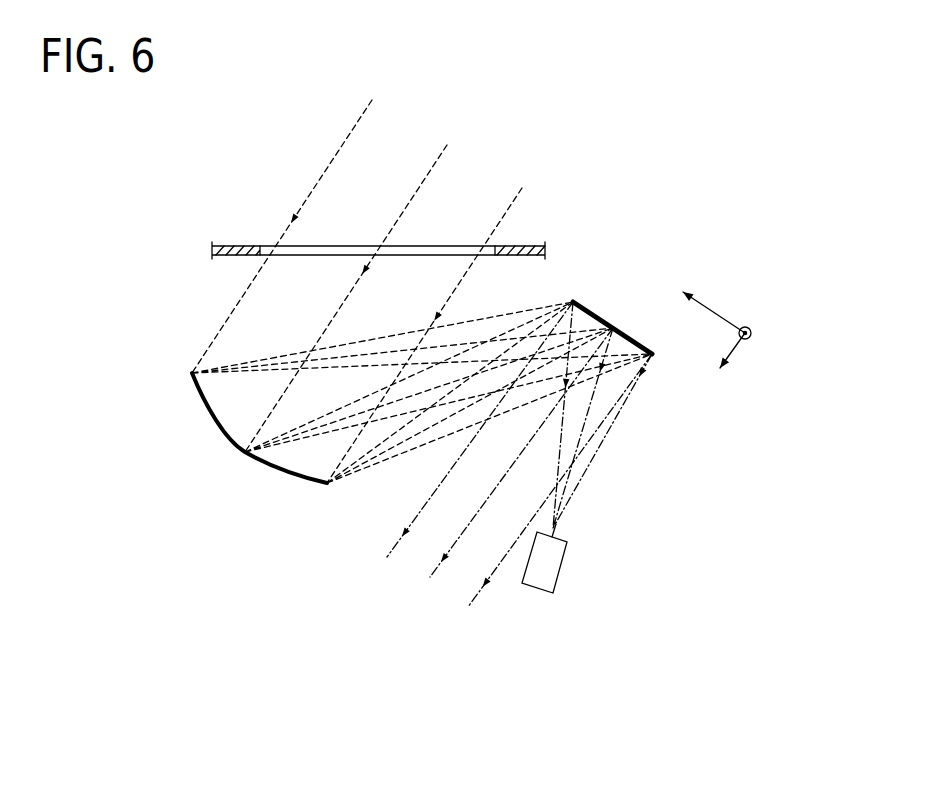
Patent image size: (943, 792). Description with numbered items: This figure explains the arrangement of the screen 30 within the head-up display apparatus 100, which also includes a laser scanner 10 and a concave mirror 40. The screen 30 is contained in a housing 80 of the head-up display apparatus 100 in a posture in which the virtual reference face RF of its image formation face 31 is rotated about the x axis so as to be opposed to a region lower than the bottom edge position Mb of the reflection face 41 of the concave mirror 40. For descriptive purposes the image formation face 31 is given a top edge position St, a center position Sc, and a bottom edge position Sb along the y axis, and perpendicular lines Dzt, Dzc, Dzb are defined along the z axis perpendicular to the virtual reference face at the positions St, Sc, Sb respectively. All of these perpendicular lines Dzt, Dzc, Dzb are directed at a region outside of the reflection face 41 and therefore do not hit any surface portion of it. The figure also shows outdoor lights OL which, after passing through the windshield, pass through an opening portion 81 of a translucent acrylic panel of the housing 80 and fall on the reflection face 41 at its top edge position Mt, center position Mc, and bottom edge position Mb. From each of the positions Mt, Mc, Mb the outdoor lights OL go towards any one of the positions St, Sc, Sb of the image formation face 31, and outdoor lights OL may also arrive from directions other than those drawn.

The head-up display apparatus 100 is at (168, 282).
The housing 80 is at (378, 224).
The opening portion 81 is at (254, 246).
The concave mirror 40 is at (244, 437).
The reflection face 41 is at (210, 412).
The screen 30 is at (627, 299).
The image formation face 31 is at (590, 312).
The laser scanner 10 is at (567, 565).
The outdoor lights OL is at (372, 124).
The top edge position of the reflection face Mt is at (192, 373).
The center position of the reflection face Mc is at (245, 452).
The bottom edge position of the reflection face Mb is at (336, 486).
The top edge position of the image formation face St is at (573, 301).
The center position of the image formation face Sc is at (614, 330).
The bottom edge position of the image formation face Sb is at (653, 356).
The perpendicular line at the top edge position Dzt is at (399, 535).
The perpendicular line at the center position Dzc is at (440, 560).
The perpendicular line at the bottom edge position Dzb is at (482, 587).